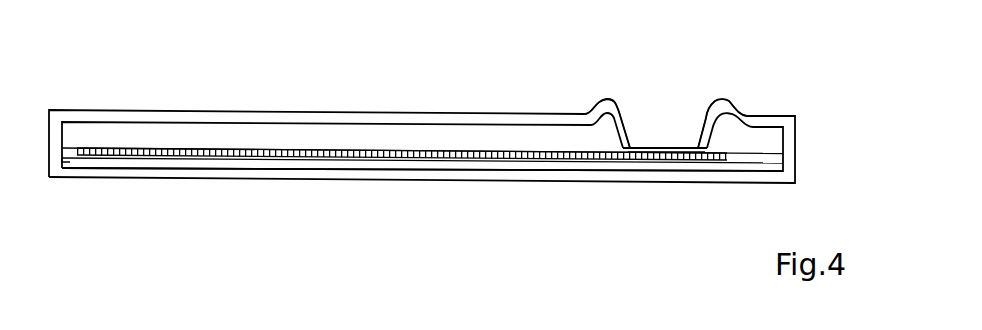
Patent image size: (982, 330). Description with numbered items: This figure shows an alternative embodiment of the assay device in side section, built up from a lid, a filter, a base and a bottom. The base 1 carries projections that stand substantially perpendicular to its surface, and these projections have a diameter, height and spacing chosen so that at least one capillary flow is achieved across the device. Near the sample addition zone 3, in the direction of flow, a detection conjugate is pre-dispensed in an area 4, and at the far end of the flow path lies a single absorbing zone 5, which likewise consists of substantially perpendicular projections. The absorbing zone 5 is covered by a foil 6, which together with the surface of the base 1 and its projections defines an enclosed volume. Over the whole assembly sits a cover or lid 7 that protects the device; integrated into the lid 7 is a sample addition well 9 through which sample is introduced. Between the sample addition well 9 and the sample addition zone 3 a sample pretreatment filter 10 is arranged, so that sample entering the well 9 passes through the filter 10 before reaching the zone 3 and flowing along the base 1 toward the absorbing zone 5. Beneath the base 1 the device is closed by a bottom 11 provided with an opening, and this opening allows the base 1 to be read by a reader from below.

The base 1 is at (483, 164).
The sample addition zone 3 is at (667, 158).
The area 4 is at (607, 127).
The absorption zone 5 is at (235, 156).
The foil 6 is at (302, 148).
The lid 7 is at (243, 112).
The sample addition well 9 is at (712, 107).
The sample pretreatment filter 10 is at (659, 147).
The bottom 11 is at (380, 180).